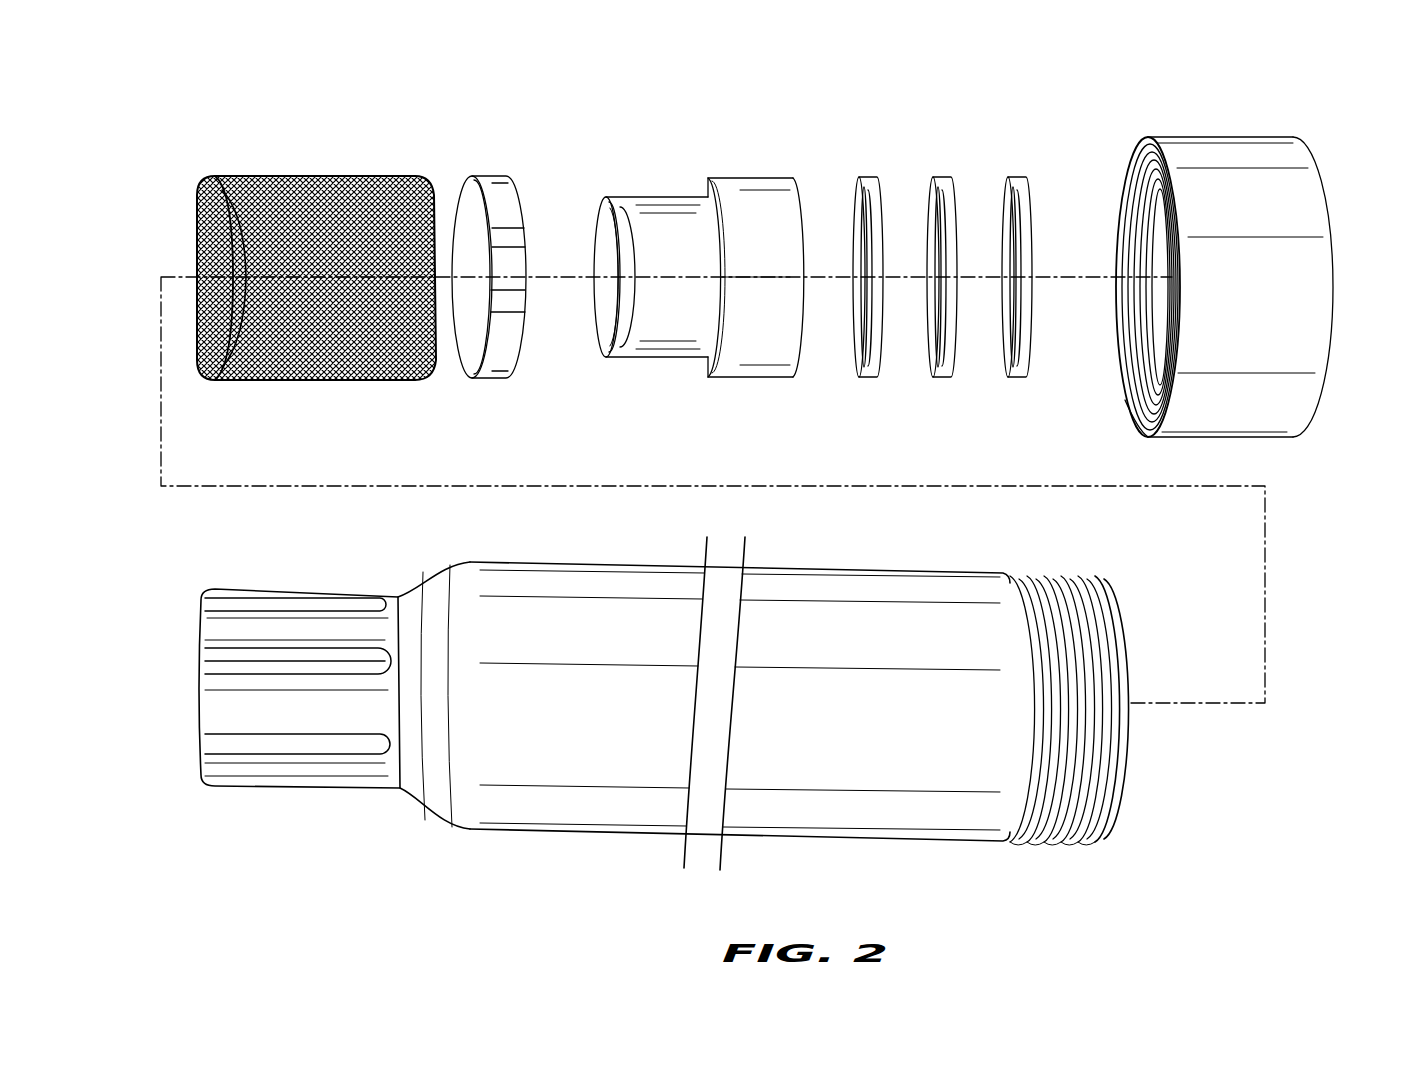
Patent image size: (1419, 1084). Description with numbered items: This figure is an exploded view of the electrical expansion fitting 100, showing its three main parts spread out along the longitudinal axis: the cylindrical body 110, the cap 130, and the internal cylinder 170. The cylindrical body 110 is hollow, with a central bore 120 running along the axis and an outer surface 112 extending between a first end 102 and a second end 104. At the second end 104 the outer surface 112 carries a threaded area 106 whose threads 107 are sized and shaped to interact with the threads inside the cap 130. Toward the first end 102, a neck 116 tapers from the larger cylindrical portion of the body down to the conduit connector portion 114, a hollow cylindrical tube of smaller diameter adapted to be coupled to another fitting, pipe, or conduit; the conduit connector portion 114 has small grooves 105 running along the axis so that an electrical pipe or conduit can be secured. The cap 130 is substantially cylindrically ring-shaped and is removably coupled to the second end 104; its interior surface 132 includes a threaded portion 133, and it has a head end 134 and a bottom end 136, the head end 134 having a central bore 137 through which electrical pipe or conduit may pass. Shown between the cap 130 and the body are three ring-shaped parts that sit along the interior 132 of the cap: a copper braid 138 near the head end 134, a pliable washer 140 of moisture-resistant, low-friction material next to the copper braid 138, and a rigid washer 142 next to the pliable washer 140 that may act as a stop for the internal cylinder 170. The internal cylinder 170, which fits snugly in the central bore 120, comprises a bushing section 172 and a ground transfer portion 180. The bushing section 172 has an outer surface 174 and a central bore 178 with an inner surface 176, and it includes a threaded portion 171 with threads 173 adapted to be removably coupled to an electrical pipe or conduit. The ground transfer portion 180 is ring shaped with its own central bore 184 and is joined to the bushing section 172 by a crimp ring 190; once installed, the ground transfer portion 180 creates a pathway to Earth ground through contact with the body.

The electrical expansion fitting 100 is at (222, 116).
The first end 102 is at (298, 674).
The second end 104 is at (1122, 630).
The grooves 105 is at (293, 604).
The threaded area 106 is at (1088, 712).
The threads 107 is at (1117, 688).
The cylindrical body 110 is at (726, 701).
The outer surface 112 is at (877, 732).
The conduit connector portion 114 is at (330, 755).
The neck 116 is at (450, 572).
The central bore 120 is at (1160, 752).
The cap 130 is at (1223, 254).
The interior surface 132 is at (1145, 140).
The threaded portion 133 is at (1140, 310).
The head end 134 is at (1335, 300).
The bottom end 136 is at (1133, 425).
The central bore 137 is at (1165, 285).
The copper braid 138 is at (1015, 178).
The pliable washer 140 is at (937, 178).
The rigid washer 142 is at (863, 178).
The internal cylinder 170 is at (291, 257).
The threaded portion 171 is at (607, 357).
The bushing section 172 is at (693, 277).
The threads 173 is at (612, 258).
The outer surface 174 is at (763, 345).
The inner surface 176 is at (810, 352).
The central bore 178 is at (610, 305).
The ground transfer portion 180 is at (285, 380).
The central bore 184 is at (205, 238).
The crimp ring 190 is at (505, 202).